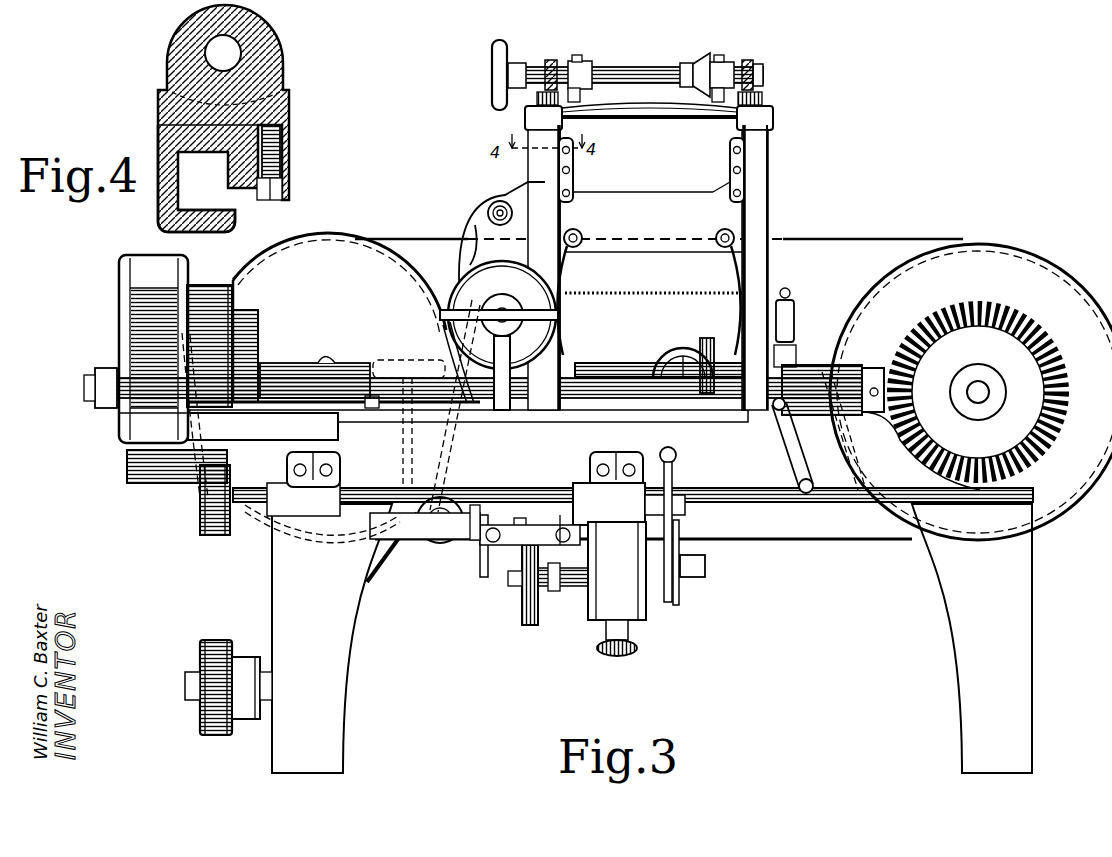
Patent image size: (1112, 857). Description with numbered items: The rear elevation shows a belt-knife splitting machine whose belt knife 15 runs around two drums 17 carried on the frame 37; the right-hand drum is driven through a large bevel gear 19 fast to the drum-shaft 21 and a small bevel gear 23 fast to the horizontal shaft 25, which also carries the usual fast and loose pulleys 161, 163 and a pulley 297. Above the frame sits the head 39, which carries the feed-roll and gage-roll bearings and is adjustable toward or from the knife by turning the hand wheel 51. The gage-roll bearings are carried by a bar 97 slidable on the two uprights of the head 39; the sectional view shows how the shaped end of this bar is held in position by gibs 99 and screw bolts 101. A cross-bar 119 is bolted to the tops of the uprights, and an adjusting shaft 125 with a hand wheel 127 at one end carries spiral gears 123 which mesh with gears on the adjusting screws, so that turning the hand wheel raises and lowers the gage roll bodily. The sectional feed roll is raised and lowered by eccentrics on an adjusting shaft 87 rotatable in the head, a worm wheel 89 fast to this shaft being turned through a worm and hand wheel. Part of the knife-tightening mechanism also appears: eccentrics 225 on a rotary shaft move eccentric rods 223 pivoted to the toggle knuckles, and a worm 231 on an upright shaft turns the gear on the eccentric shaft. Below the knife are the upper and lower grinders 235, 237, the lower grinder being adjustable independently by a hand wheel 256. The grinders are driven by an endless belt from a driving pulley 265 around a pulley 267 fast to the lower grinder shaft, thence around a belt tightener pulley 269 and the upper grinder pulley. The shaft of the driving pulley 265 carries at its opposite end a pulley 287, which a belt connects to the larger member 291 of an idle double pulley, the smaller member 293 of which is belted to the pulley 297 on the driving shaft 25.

In FIG. 4, the bar 97 is at (276, 97).
In FIG. 4, the gibs 99 is at (281, 168).
In FIG. 3, the gibs 99 is at (575, 182).
In FIG. 4, the screw bolts 101 is at (283, 194).
In FIG. 3, the screw bolts 101 is at (575, 166).
In FIG. 4, the head 39 is at (162, 200).
In FIG. 3, the head 39 is at (545, 196).
In FIG. 3, the hand wheel 127 is at (492, 55).
In FIG. 3, the spiral gears 123 is at (550, 60).
In FIG. 3, the adjusting shaft 125 is at (633, 68).
In FIG. 3, the cross-bar 119 is at (664, 114).
In FIG. 3, the belt knife 15 is at (824, 239).
In FIG. 3, the drums 17 is at (314, 262).
In FIG. 3, the large bevel gear 19 is at (976, 300).
In FIG. 3, the drum-shaft 21 is at (982, 390).
In FIG. 3, the small bevel gear 23 is at (893, 370).
In FIG. 3, the shaft 25 is at (92, 388).
In FIG. 3, the hand wheel 51 is at (662, 348).
In FIG. 3, the adjusting shaft 87 is at (580, 362).
In FIG. 3, the worm wheel 89 is at (708, 345).
In FIG. 3, the frame 37 is at (755, 470).
In FIG. 3, the fast pulley 161 is at (145, 312).
In FIG. 3, the loose pulley 163 is at (203, 300).
In FIG. 3, the pulley 297 is at (250, 345).
In FIG. 3, the upper grinder 235 is at (392, 365).
In FIG. 3, the lower grinder 237 is at (526, 614).
In FIG. 3, the eccentric rods 223 is at (428, 542).
In FIG. 3, the eccentrics 225 is at (442, 528).
In FIG. 3, the worm 231 is at (406, 535).
In FIG. 3, the pulley 287 is at (215, 525).
In FIG. 3, the larger member of idle double pulley 291 is at (215, 655).
In FIG. 3, the smaller member of idle double pulley 293 is at (247, 722).
In FIG. 3, the driving pulley 265 is at (662, 520).
In FIG. 3, the pulley 267 is at (678, 602).
In FIG. 3, the belt tightener pulley 269 is at (678, 560).
In FIG. 3, the hand wheel 256 is at (619, 656).